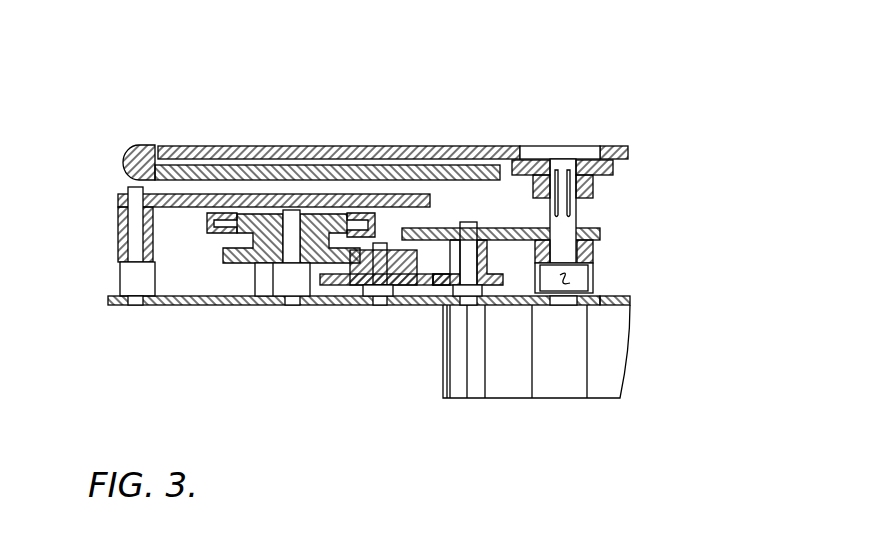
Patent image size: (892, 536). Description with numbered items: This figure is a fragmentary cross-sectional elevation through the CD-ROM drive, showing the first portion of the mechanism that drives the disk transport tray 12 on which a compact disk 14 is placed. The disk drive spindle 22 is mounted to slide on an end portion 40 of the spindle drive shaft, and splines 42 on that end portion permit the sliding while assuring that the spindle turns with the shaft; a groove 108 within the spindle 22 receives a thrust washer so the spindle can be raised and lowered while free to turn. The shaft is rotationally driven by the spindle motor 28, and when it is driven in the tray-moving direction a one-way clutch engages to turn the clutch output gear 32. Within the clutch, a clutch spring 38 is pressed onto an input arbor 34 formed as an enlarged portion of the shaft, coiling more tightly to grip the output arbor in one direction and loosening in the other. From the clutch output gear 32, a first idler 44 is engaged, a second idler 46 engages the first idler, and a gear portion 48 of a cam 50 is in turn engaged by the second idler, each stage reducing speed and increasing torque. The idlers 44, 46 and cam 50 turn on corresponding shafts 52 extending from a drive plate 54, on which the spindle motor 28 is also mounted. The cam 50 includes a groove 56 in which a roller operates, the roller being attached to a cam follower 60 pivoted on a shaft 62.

The disk transport tray 12 is at (245, 167).
The compact disk 14 is at (357, 146).
The disk drive spindle 22 is at (615, 172).
The spindle motor 28 is at (443, 338).
The clutch output gear 32 is at (592, 247).
The input arbor 34 is at (605, 302).
The clutch spring 38 is at (600, 248).
The end portion 40 is at (597, 145).
The splines 42 is at (533, 147).
The first idler 44 is at (508, 228).
The second idler 46 is at (410, 300).
The gear portion 48 is at (198, 305).
The cam 50 is at (253, 268).
The shafts 52 is at (290, 213).
The drive plate 54 is at (148, 307).
The groove 56 is at (223, 218).
The cam follower 60 is at (172, 192).
The shaft 62 is at (135, 182).
The groove 108 is at (597, 192).